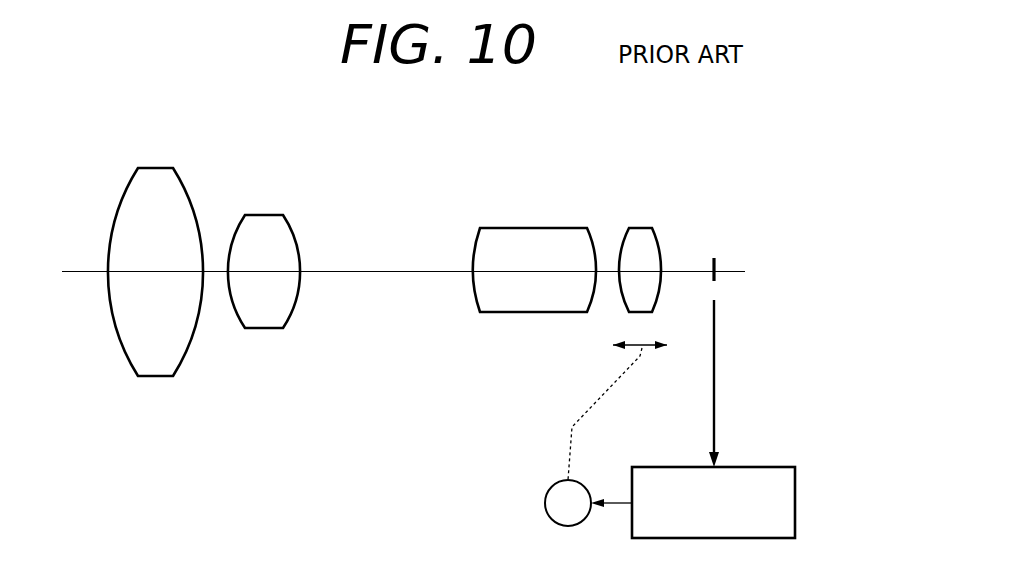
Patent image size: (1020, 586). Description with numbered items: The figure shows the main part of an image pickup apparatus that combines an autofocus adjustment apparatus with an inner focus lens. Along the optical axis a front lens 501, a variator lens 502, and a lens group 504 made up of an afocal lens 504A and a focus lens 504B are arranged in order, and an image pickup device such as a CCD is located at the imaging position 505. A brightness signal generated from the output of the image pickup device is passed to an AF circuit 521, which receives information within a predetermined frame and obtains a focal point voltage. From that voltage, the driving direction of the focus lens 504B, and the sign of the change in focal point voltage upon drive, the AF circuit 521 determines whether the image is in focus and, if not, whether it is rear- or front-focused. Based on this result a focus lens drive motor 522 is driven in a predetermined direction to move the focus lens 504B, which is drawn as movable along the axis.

The front lens 501 is at (157, 168).
The variator lens 502 is at (270, 215).
The lens group 504 is at (678, 151).
The afocal lens 504A is at (527, 228).
The focus lens 504B is at (645, 228).
The imaging position 505 is at (716, 257).
The AF circuit 521 is at (765, 467).
The focus lens drive motor 522 is at (585, 484).